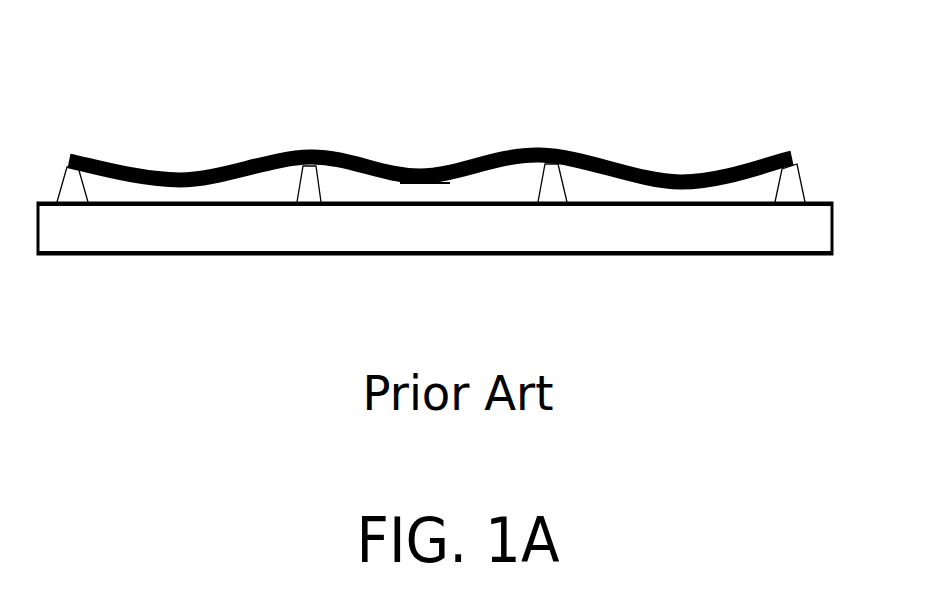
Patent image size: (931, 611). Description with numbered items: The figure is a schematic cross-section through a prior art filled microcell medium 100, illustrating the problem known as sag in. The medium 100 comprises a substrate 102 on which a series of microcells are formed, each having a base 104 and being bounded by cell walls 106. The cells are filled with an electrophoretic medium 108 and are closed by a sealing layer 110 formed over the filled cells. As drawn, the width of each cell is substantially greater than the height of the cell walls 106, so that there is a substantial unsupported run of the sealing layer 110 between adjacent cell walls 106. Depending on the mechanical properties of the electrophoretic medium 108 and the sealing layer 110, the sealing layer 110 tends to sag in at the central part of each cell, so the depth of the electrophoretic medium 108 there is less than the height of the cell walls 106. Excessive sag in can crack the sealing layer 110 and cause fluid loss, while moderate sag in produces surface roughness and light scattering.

The filled microcell medium 100 is at (100, 122).
The substrate 102 is at (353, 240).
The bases 104 is at (177, 199).
The cell walls 106 is at (582, 158).
The electrophoretic medium 108 is at (294, 196).
The sealing layer 110 is at (423, 174).